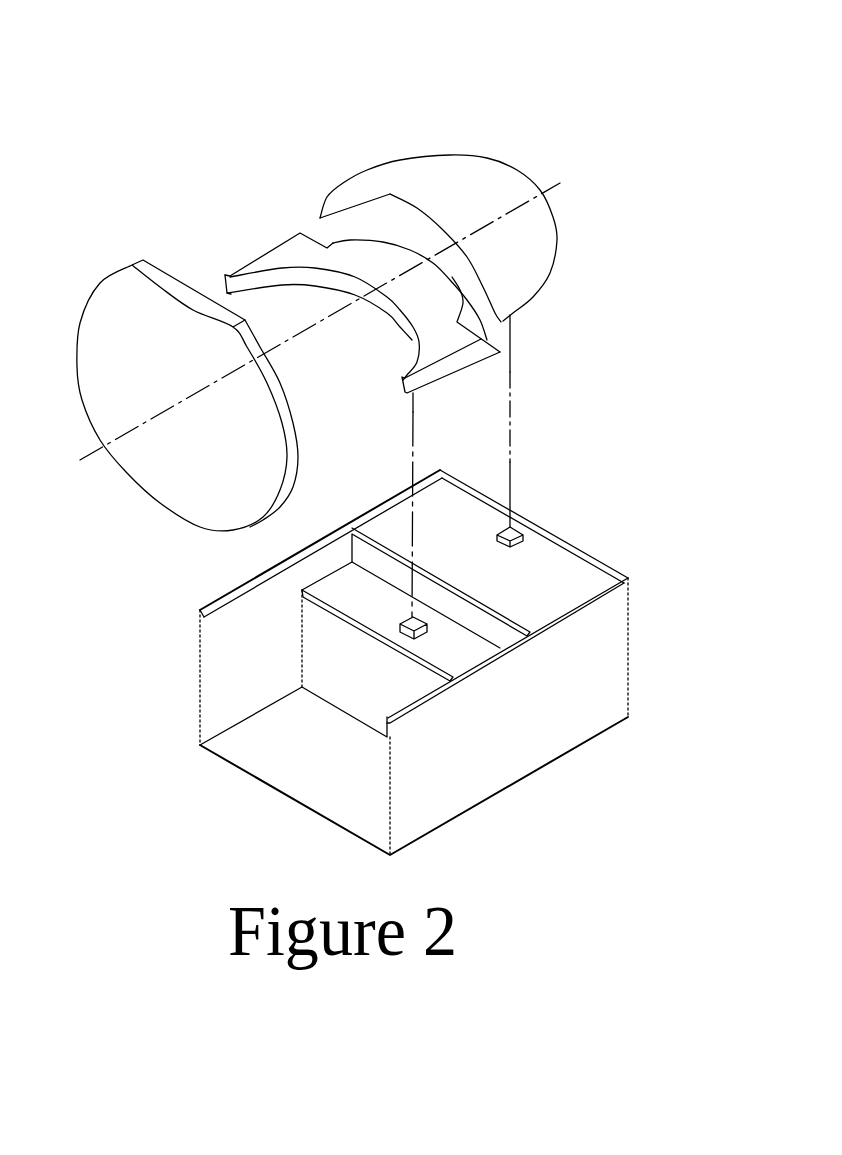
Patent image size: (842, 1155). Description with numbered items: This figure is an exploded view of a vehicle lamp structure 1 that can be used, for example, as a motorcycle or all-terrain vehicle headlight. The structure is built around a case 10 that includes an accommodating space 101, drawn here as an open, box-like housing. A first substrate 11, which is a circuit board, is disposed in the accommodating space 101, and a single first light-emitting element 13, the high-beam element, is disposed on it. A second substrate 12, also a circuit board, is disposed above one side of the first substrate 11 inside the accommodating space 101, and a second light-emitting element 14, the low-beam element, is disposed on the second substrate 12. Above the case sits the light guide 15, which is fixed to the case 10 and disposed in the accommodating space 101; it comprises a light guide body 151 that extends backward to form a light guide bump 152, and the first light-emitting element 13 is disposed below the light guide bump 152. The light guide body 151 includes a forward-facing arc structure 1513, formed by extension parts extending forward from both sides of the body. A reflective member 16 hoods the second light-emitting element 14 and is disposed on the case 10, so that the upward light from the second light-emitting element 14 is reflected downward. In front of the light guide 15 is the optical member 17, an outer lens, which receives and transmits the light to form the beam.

The vehicle lamp structure 1 is at (373, 68).
The case 10 is at (547, 743).
The accommodating space 101 is at (222, 638).
The first substrate 11 is at (352, 608).
The second substrate 12 is at (470, 503).
The first light-emitting element 13 is at (405, 620).
The second light-emitting element 14 is at (521, 526).
The light guide 15 is at (283, 220).
The light guide body 151 is at (430, 315).
The light guide bump 152 is at (451, 275).
The arc structure 1513 is at (380, 297).
The reflective member 16 is at (527, 193).
The optical member 17 is at (112, 308).